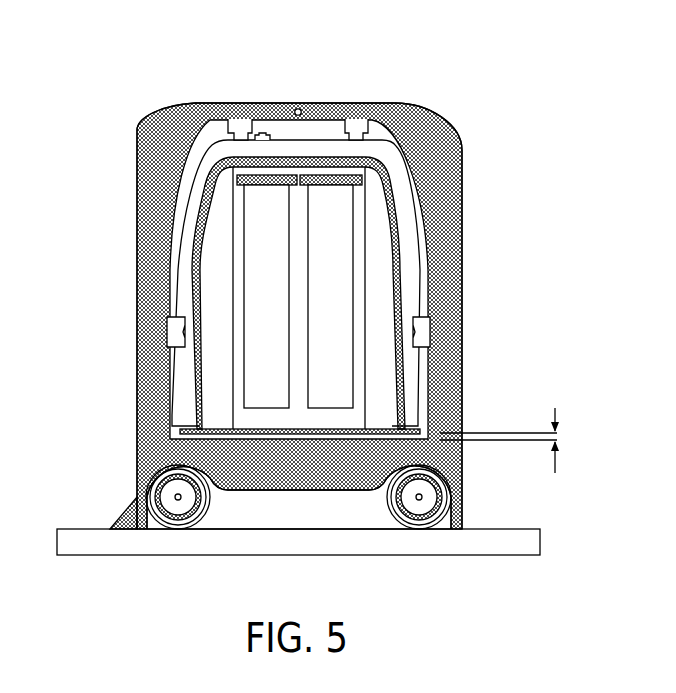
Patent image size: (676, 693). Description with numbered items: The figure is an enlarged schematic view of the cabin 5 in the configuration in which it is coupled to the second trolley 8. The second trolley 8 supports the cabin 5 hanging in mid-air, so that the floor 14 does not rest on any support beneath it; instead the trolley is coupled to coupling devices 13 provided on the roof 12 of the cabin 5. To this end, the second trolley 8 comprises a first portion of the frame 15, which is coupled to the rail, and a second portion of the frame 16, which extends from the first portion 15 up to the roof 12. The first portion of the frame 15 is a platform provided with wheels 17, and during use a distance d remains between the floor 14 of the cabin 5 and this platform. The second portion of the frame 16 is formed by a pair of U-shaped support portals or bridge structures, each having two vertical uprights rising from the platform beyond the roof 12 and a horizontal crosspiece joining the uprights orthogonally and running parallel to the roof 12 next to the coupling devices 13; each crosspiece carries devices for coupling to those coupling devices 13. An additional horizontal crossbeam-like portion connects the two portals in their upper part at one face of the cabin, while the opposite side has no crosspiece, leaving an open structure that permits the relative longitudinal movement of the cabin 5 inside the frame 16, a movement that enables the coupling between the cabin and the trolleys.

The cabin 5 is at (420, 256).
The second trolley 8 is at (135, 310).
The roof 12 is at (327, 157).
The coupling devices 13 is at (383, 125).
The floor 14 is at (358, 434).
The first portion of the frame 15 is at (263, 472).
The second portion of the frame 16 is at (137, 275).
The wheels 17 is at (445, 522).
The distance d is at (557, 436).